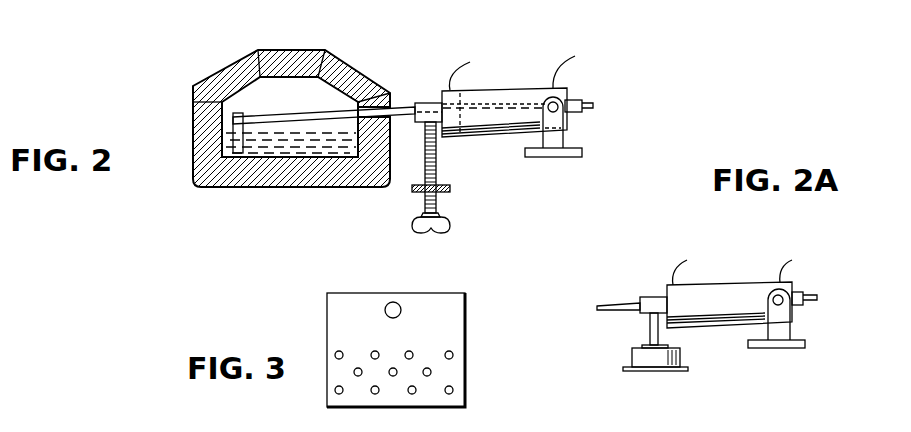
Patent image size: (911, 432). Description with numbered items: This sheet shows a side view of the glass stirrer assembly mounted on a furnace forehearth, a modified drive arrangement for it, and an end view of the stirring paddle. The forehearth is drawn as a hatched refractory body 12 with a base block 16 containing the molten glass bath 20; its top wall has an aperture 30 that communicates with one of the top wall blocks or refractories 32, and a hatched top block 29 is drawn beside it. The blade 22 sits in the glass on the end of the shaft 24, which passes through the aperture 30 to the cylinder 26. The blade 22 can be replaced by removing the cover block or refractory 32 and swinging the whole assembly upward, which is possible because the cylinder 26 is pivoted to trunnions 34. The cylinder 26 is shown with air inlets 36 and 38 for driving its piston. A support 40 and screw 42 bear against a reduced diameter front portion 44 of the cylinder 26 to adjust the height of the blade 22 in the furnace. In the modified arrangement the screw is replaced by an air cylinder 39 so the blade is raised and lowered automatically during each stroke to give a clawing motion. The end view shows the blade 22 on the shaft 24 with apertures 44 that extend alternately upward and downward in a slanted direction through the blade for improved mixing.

In FIG. 2, the furnace wall 12 is at (195, 137).
In FIG. 2, the furnace body / base block 16 is at (265, 176).
In FIG. 2, the molten bath 20 is at (318, 148).
In FIG. 2, the blade 22 is at (233, 140).
In FIG. 3, the blade 22 is at (453, 327).
In FIG. 2A, the shaft 24 is at (622, 302).
In FIG. 3, the shaft 24 is at (393, 302).
In FIG. 2, the cylinder 26 is at (525, 100).
In FIG. 2A, the cylinder 26 is at (723, 292).
In FIG. 2, the top block 29 is at (270, 50).
In FIG. 2, the aperture 30 is at (383, 107).
In FIG. 2, the top wall block 32 is at (347, 70).
In FIG. 2, the trunnions 34 is at (560, 138).
In FIG. 2A, the trunnions 34 is at (778, 330).
In FIG. 2, the air inlet 36 is at (472, 62).
In FIG. 2, the air inlet 38 is at (577, 58).
In FIG. 2A, the air cylinder 39 is at (638, 357).
In FIG. 2, the support 40 is at (448, 190).
In FIG. 2A, the support 40 is at (650, 372).
In FIG. 2, the screw 42 is at (437, 167).
In FIG. 2, the reduced diameter front portion / apertures 44 is at (421, 119).
In FIG. 3, the reduced diameter front portion / apertures 44 is at (452, 388).